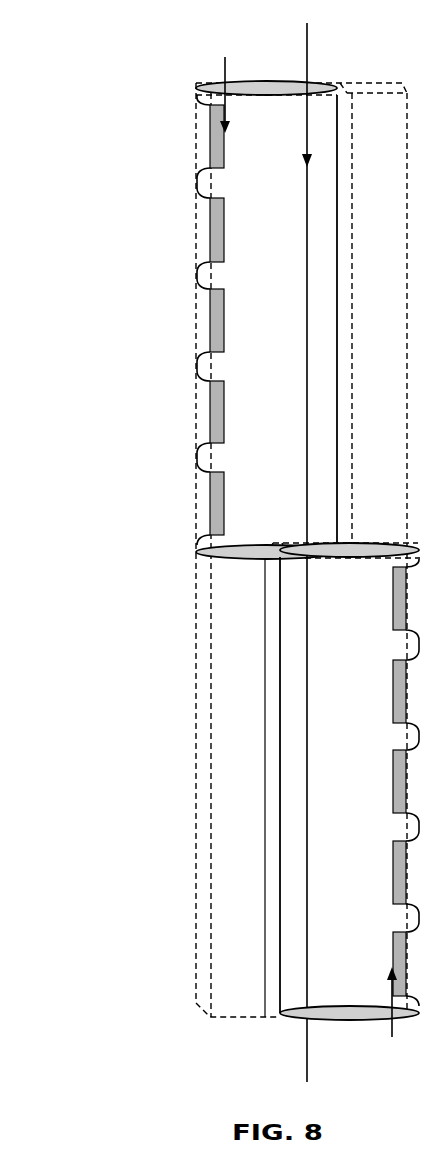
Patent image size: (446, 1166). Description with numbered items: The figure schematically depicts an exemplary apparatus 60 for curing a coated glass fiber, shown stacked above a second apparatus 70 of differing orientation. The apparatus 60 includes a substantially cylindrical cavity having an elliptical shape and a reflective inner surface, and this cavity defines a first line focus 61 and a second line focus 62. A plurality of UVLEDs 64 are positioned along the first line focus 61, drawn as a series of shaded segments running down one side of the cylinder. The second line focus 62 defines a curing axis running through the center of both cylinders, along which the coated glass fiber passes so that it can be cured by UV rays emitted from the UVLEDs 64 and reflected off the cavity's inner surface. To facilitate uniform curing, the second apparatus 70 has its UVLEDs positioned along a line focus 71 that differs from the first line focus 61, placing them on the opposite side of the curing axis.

The apparatus 60 is at (172, 313).
The first line focus 61 is at (214, 75).
The second line focus 62 is at (295, 550).
The UVLEDs 64 is at (207, 232).
The second apparatus 70 is at (242, 791).
The line focus 71 is at (382, 1014).